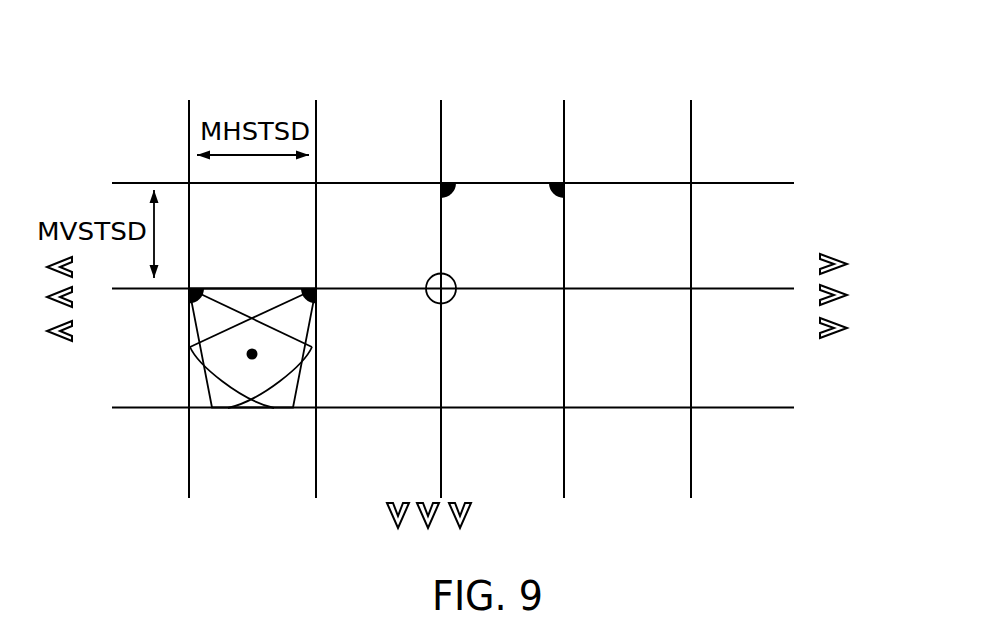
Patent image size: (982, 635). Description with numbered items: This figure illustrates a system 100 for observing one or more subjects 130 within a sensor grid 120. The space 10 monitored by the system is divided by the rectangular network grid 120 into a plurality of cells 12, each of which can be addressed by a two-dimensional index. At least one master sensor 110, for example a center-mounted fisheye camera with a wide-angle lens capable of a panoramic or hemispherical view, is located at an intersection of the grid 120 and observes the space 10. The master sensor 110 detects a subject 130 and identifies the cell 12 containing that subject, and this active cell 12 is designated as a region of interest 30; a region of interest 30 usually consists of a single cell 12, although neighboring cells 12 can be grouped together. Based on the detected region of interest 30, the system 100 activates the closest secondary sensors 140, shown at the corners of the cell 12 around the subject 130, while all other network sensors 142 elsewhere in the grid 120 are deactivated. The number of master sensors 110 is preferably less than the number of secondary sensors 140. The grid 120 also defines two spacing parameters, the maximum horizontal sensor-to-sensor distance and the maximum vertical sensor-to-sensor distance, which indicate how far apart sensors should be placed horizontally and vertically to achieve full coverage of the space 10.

The space 10 is at (638, 84).
The cell 12 is at (186, 375).
The region of interest 30 is at (298, 390).
The system 100 is at (134, 88).
The master sensor 110 is at (457, 297).
The sensor grid 120 is at (692, 143).
The subject 130 is at (288, 347).
The secondary sensor 140 is at (190, 288).
The deactivated sensor 142 is at (441, 183).